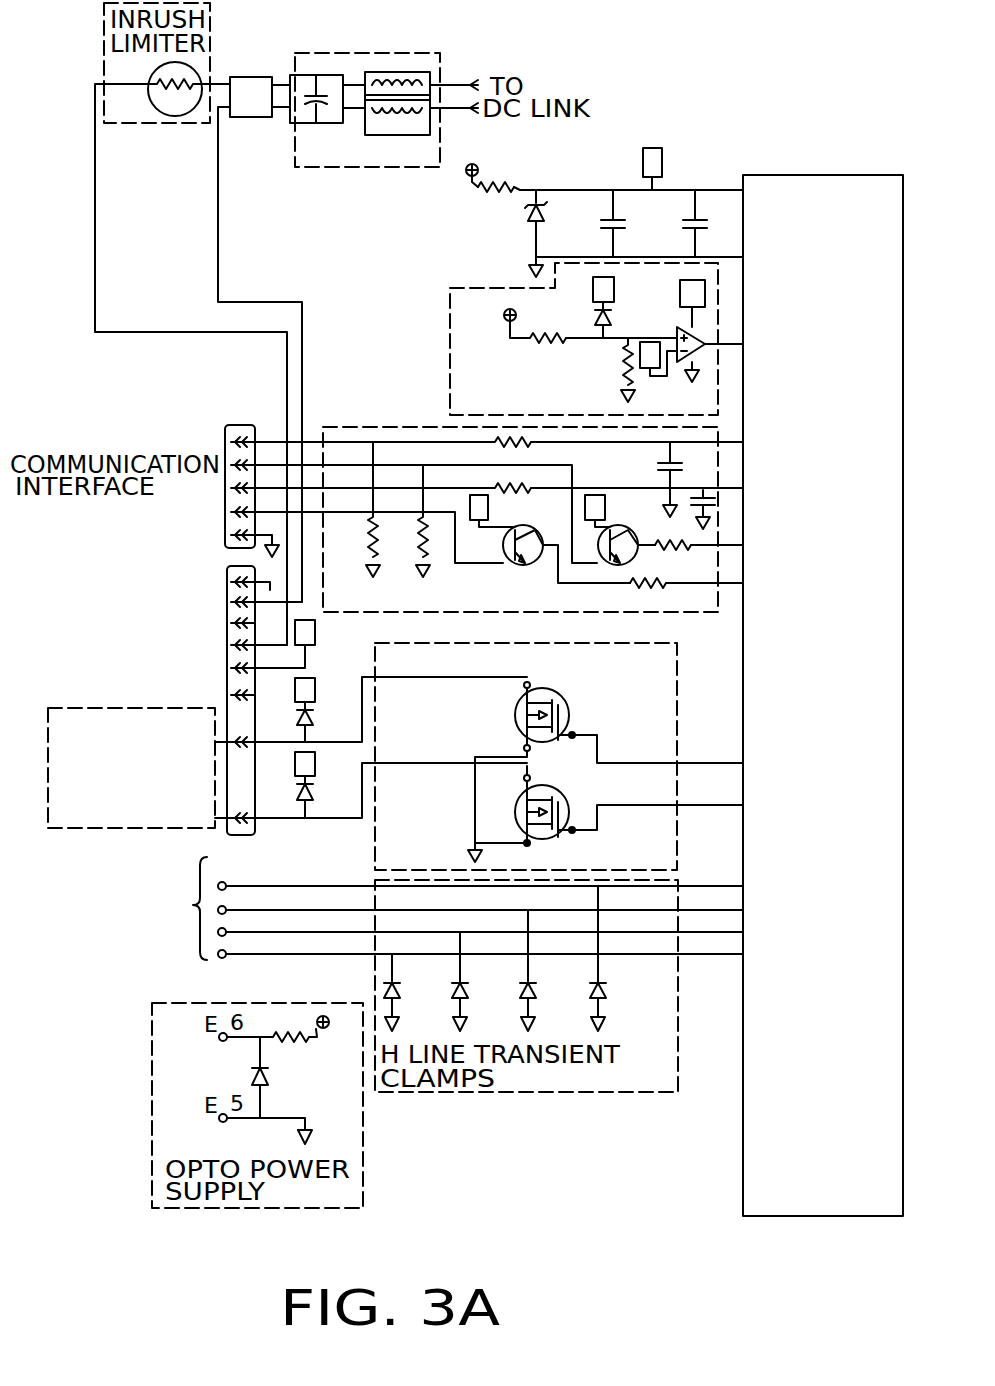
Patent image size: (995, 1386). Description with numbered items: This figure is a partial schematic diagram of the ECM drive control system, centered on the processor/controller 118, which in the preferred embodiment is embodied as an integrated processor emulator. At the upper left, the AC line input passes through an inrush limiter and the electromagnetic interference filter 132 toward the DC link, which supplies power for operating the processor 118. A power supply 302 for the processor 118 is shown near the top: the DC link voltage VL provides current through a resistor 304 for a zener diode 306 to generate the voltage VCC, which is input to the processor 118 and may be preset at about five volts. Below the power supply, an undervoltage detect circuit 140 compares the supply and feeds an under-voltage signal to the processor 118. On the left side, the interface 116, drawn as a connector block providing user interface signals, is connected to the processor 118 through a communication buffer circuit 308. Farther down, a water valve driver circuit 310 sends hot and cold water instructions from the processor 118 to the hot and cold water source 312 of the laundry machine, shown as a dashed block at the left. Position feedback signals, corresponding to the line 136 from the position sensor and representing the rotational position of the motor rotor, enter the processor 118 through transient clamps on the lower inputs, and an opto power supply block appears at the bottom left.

The electromagnetic interference filter 132 is at (334, 167).
The power supply 302 is at (608, 200).
The resistor 304 is at (505, 197).
The zener diode 306 is at (528, 224).
The undervoltage detect circuit 140 is at (450, 335).
The communication buffer circuit 308 is at (642, 479).
The interface 116 is at (262, 836).
The processor/controller 118 is at (815, 756).
The hot and cold water source 312 is at (100, 777).
The water valve driver circuit 310 is at (645, 706).
The line 136 is at (200, 963).